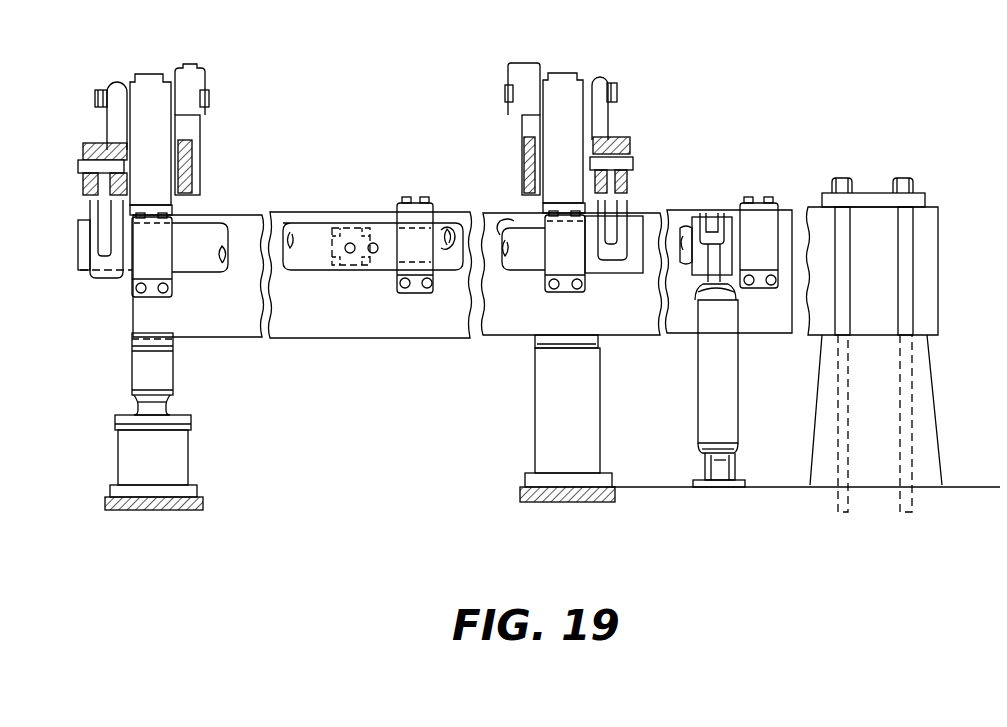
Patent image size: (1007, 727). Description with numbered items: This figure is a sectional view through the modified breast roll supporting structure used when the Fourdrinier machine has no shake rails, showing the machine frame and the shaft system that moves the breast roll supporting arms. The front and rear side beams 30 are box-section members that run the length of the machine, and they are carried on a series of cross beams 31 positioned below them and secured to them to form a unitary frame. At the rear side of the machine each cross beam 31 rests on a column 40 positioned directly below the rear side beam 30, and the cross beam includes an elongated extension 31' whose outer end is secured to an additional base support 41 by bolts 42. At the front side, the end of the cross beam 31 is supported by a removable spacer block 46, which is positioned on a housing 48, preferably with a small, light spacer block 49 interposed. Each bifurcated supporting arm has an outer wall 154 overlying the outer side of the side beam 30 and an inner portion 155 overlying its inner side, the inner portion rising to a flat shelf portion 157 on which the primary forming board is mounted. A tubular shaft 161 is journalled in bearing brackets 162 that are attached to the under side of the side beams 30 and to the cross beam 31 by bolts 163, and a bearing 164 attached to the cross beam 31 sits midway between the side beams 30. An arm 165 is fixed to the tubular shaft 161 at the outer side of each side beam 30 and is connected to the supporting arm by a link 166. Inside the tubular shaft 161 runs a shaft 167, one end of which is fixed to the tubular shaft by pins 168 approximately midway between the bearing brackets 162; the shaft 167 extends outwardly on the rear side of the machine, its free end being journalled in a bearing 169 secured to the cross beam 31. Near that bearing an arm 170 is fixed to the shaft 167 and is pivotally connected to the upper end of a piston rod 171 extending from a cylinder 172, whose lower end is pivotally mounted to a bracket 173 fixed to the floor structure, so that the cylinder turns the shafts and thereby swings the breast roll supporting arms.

The side beam 30 is at (356, 144).
The cross beam 31 is at (462, 274).
The elongated extension 31' is at (802, 339).
The column 40 is at (567, 418).
The additional base support 41 is at (928, 409).
The bolt 42 is at (905, 294).
The removable spacer block 46 is at (167, 376).
The housing 48 is at (154, 462).
The spacer block 49 is at (170, 403).
The outer wall 154 is at (110, 128).
The inner portion 155 is at (189, 150).
The shelf portion 157 is at (190, 72).
The tubular shaft 161 is at (532, 272).
The bearing bracket 162 is at (359, 254).
The bolt 163 is at (168, 288).
The bearing 164 is at (418, 245).
The arm 165 is at (92, 246).
The link 166 is at (90, 199).
The shaft 167 is at (450, 232).
The pin 168 is at (351, 244).
The bearing 169 is at (770, 210).
The arm 170 is at (702, 272).
The piston rod 171 is at (730, 292).
The cylinder 172 is at (718, 376).
The bracket 173 is at (708, 477).